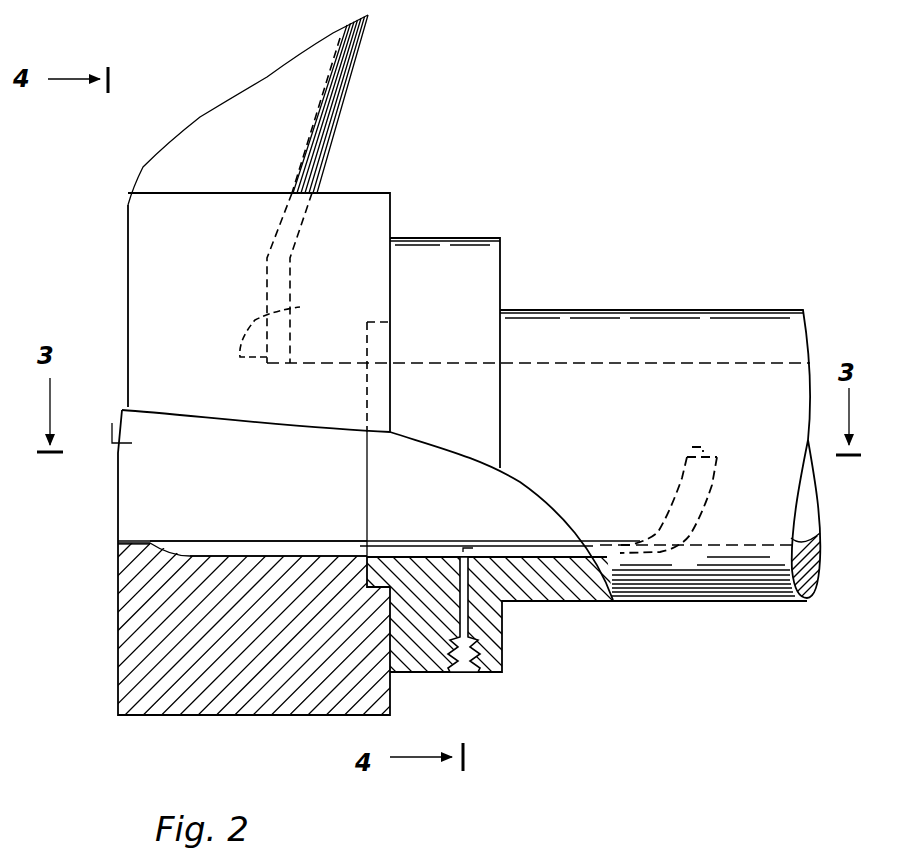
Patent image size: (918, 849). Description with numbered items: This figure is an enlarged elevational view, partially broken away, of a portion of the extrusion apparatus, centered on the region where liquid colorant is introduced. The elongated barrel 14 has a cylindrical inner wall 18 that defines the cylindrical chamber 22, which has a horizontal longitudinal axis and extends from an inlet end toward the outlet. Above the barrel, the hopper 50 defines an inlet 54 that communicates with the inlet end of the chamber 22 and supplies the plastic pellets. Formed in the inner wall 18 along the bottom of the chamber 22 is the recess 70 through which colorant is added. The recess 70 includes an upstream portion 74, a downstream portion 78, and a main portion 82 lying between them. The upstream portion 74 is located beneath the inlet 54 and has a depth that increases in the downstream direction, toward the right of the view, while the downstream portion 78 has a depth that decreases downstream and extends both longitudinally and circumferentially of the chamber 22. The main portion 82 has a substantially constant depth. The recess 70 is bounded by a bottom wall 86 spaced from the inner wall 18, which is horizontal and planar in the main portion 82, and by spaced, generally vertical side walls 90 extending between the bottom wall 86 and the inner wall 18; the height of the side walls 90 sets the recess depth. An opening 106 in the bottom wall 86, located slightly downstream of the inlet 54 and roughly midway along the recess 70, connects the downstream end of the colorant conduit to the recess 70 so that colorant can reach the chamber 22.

The barrel 14 is at (718, 320).
The inner wall 18 is at (805, 500).
The chamber 22 is at (412, 478).
The hopper 50 is at (327, 57).
The inlet 54 is at (295, 320).
The recess 70 is at (331, 539).
The upstream portion 74 is at (185, 533).
The downstream portion 78 is at (673, 490).
The main portion 82 is at (511, 538).
The bottom wall 86 is at (260, 555).
The side walls 90 is at (563, 553).
The opening 106 is at (462, 552).